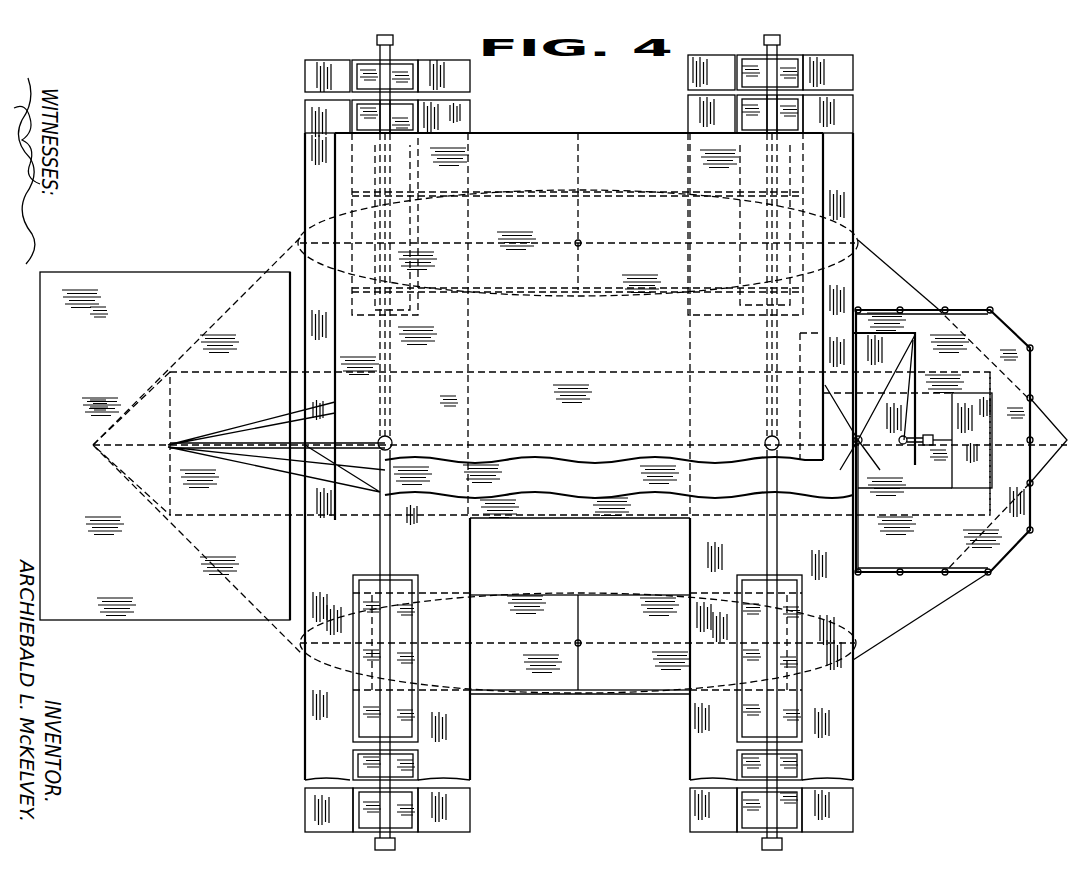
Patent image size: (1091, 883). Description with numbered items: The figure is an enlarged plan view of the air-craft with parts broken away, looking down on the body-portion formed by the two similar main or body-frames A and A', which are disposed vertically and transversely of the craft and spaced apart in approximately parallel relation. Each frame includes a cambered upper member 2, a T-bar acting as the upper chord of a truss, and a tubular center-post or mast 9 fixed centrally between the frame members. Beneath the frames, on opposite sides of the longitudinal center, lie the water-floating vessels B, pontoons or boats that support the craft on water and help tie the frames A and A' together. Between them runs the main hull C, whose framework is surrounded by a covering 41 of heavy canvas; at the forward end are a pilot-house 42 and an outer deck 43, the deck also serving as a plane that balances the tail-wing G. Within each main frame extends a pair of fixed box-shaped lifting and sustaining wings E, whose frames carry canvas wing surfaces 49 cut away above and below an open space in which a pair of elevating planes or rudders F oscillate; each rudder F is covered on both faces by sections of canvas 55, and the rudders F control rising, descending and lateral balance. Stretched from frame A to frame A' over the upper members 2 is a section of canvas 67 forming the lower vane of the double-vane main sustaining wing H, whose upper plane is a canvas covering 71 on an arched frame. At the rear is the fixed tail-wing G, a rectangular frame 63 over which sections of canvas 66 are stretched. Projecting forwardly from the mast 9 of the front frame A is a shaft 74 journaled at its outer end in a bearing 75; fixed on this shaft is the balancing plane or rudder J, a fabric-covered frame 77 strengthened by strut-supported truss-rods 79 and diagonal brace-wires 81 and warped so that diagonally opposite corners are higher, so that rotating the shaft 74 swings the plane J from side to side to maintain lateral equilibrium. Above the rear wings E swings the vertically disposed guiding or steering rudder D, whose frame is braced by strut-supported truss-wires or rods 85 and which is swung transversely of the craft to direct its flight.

The upper member 2 is at (388, 122).
The center-post or mast 9 is at (390, 440).
The covering 41 is at (895, 478).
The pilot-house 42 is at (962, 440).
The outer deck 43 is at (960, 450).
The wing surfaces 49 is at (462, 583).
The sections of canvas 55 is at (372, 760).
The frame 63 is at (44, 518).
The sections of canvas 66 is at (165, 446).
The section of canvas 67 is at (495, 470).
The covering of canvas 71 is at (582, 390).
The shaft 74 is at (925, 435).
The bearing 75 is at (925, 452).
The frame 77 is at (870, 334).
The truss-rods 79 is at (855, 388).
The brace-wires 81 is at (852, 413).
The truss-wires or rods 85 is at (305, 418).
The front main or body-frame A is at (756, 441).
The rear main or body-frame A' is at (409, 442).
The water-floating vessels B is at (300, 240).
The main hull C is at (572, 505).
The guiding or steering rudder D is at (262, 455).
The fixed lifting and sustaining wings E is at (455, 122).
The elevating planes or rudders F is at (362, 120).
The tail-wing G is at (240, 612).
The main lifting and sustaining wing H is at (662, 448).
The balancing plane or rudder J is at (848, 468).